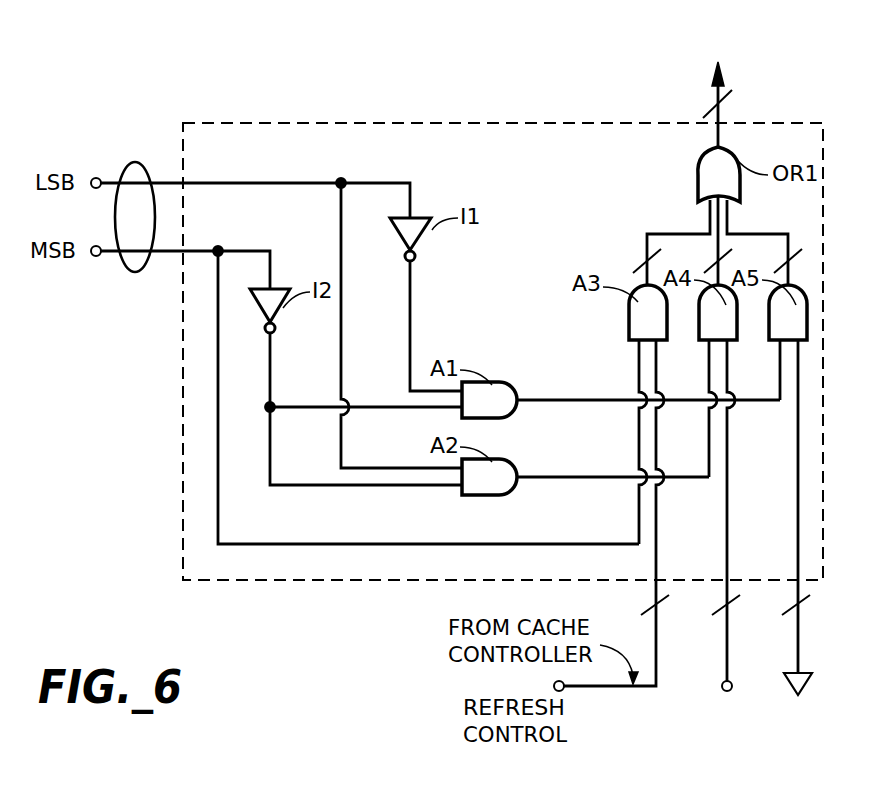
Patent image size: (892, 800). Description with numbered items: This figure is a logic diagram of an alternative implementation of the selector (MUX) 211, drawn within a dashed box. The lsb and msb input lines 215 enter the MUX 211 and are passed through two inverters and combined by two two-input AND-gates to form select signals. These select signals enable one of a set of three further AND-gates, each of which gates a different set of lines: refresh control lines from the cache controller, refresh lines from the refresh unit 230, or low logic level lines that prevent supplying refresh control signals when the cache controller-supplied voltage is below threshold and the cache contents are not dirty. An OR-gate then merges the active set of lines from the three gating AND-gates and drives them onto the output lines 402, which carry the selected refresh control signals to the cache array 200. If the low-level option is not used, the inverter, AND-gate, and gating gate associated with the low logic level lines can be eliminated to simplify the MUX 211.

The cache array 200 is at (759, 45).
The selector (MUX) 211 is at (178, 382).
The lsb and msb input lines 215 is at (143, 163).
The refresh unit 230 is at (680, 752).
The output lines 402 is at (715, 96).